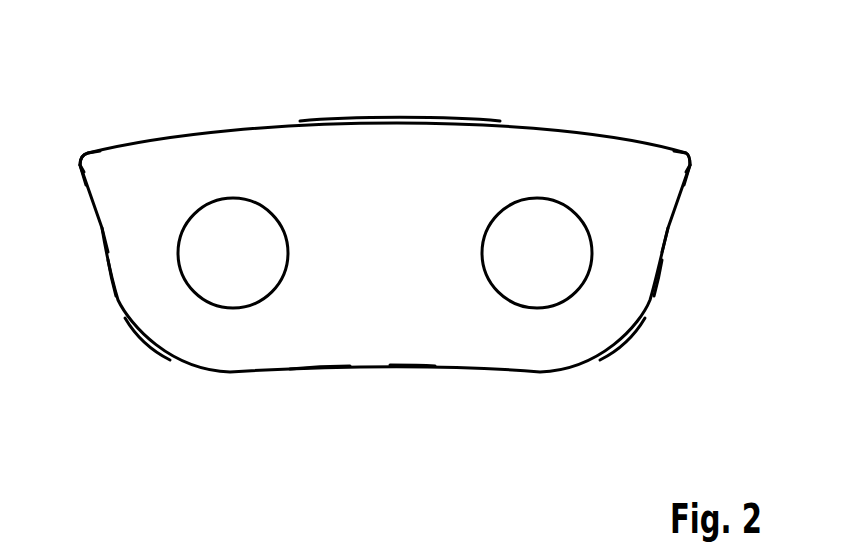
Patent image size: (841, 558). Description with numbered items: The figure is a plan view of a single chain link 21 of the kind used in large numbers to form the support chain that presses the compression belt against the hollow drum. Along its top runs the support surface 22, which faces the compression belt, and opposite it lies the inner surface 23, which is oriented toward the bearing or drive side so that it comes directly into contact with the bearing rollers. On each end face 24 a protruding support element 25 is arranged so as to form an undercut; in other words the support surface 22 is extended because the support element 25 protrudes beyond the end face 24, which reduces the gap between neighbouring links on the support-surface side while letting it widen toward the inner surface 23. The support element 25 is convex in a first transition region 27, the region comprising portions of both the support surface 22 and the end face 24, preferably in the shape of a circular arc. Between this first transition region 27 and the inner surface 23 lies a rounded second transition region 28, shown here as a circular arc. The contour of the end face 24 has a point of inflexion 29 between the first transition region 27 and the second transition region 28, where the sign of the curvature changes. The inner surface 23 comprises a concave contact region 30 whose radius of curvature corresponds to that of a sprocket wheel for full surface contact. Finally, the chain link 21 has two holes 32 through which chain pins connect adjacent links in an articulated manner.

The chain link 21 is at (622, 88).
The support surface 22 is at (400, 123).
The inner surface 23 is at (328, 368).
The end face 24 is at (112, 276).
The support element 25 is at (90, 165).
The first transition region 27 is at (80, 164).
The second transition region 28 is at (151, 346).
The point of inflexion 29 is at (106, 244).
The concave contact region 30 is at (407, 368).
The holes 32 is at (233, 197).